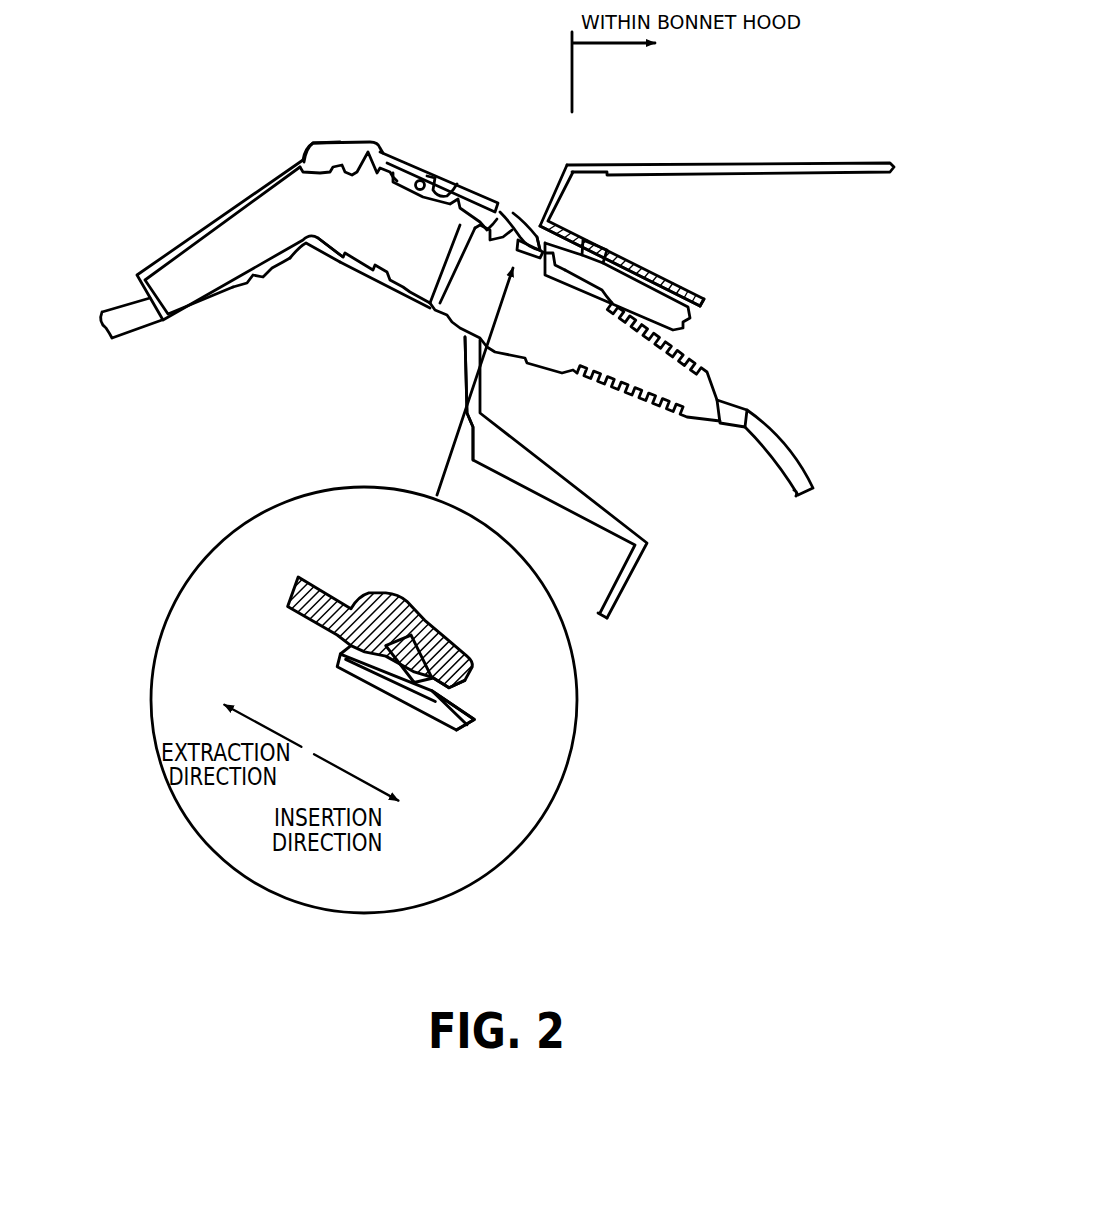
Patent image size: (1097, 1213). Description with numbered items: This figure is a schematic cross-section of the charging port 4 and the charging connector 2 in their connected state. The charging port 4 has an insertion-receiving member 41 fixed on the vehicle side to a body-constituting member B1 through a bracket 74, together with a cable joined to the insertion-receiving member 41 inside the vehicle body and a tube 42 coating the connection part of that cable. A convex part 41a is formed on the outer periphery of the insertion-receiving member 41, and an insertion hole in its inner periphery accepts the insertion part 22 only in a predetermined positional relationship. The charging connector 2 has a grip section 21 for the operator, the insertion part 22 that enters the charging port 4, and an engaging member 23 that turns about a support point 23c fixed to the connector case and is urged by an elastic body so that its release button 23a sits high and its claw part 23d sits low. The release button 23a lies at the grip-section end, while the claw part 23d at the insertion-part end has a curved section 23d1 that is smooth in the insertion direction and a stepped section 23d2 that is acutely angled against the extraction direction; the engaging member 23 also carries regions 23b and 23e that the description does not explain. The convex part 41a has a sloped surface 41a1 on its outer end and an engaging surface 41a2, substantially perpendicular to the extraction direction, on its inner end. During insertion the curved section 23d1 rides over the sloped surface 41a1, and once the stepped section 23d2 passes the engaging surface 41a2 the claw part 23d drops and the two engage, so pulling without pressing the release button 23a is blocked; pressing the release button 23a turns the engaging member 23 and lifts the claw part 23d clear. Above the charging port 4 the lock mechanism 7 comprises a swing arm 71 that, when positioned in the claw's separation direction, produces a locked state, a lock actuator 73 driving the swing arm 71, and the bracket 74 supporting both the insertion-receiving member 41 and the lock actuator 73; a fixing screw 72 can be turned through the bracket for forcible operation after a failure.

The charging connector 2 is at (258, 178).
The grip section 21 is at (277, 268).
The insertion part 22 is at (470, 297).
The engaging member 23 is at (364, 137).
The release button 23a is at (333, 146).
The arm portion of lock lever 23b is at (460, 200).
The support point 23c is at (424, 180).
The claw part 23d is at (513, 212).
The curved section 23d1 is at (440, 687).
The stepped section 23d2 is at (408, 676).
The lever end portion 23e is at (553, 232).
The charging port 4 is at (462, 345).
The insertion-receiving member 41 is at (458, 312).
The convex part 41a is at (530, 240).
The sloped surface 41a1 is at (328, 646).
The engaging surface 41a2 is at (417, 682).
The tube 42 is at (623, 398).
The lock mechanism 7 is at (654, 259).
The swing arm 71 is at (583, 242).
The fixing screw 72 is at (597, 243).
The lock actuator 73 is at (678, 312).
The bracket 74 is at (703, 298).
The body-constituting member B1 is at (780, 162).